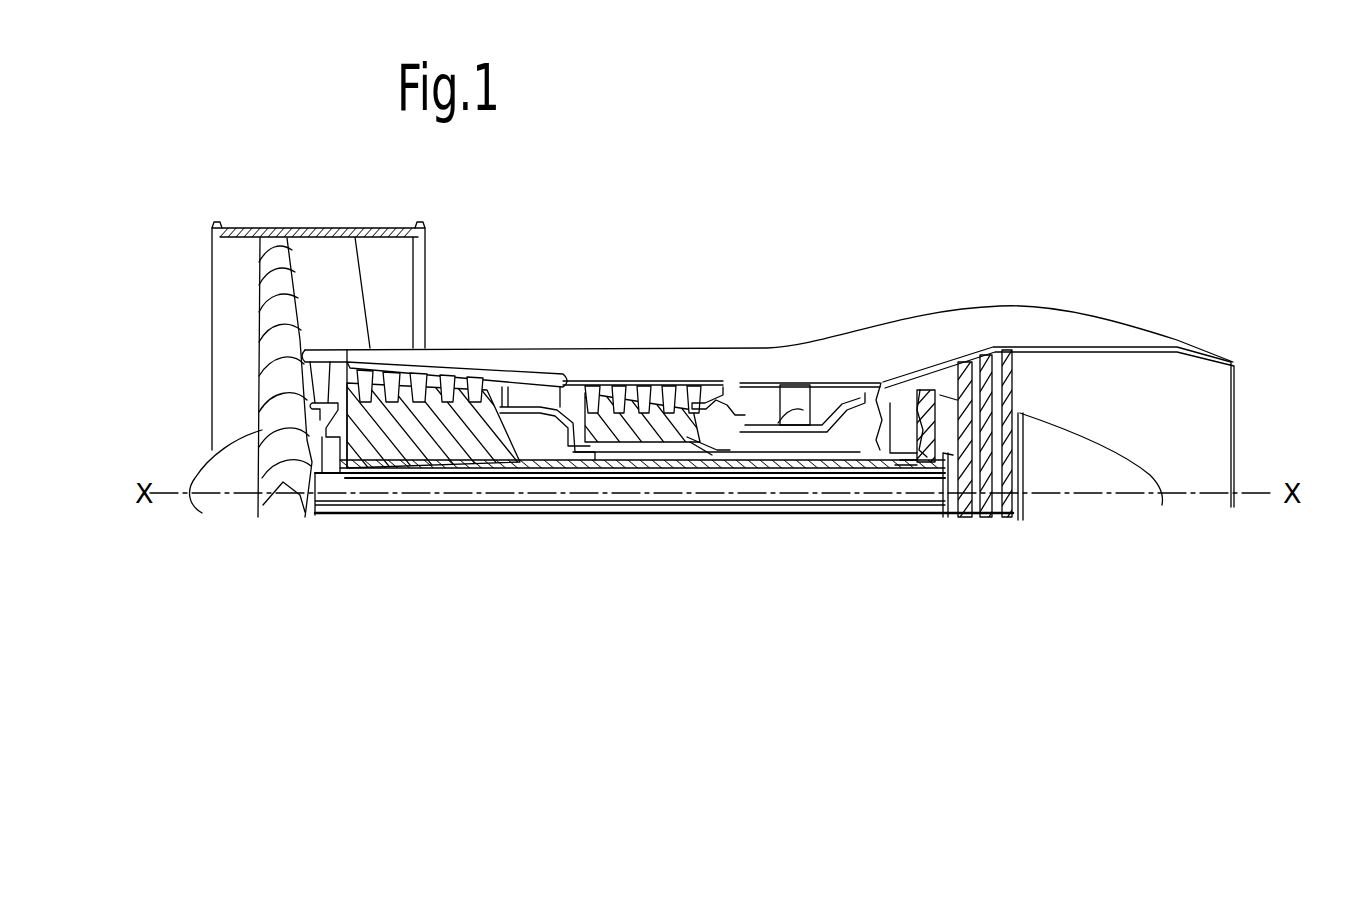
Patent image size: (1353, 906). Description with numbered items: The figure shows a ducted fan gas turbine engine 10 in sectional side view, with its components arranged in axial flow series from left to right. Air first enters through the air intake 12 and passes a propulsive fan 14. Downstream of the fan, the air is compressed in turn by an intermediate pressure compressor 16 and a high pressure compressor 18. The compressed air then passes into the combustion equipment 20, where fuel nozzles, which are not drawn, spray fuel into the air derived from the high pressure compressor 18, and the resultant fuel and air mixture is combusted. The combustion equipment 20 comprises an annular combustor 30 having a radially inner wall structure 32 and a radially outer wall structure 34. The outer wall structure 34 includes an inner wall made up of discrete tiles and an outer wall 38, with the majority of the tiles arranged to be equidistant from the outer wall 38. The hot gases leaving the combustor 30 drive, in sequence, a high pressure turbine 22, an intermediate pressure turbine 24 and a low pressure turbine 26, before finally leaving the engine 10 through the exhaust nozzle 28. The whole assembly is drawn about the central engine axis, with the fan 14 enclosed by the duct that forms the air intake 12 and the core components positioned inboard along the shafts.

The ducted fan gas turbine engine 10 is at (628, 262).
The air intake 12 is at (183, 353).
The propulsive fan 14 is at (280, 275).
The intermediate pressure compressor 16 is at (457, 348).
The high pressure compressor 18 is at (637, 390).
The combustion equipment 20 is at (797, 378).
The high pressure turbine 22 is at (881, 380).
The intermediate pressure turbine 24 is at (920, 388).
The low pressure turbine 26 is at (1020, 377).
The exhaust nozzle 28 is at (1208, 448).
The annular combustor 30 is at (745, 412).
The radially inner wall structure 32 is at (833, 465).
The radially outer wall structure 34 is at (767, 388).
The outer wall 38 is at (748, 385).